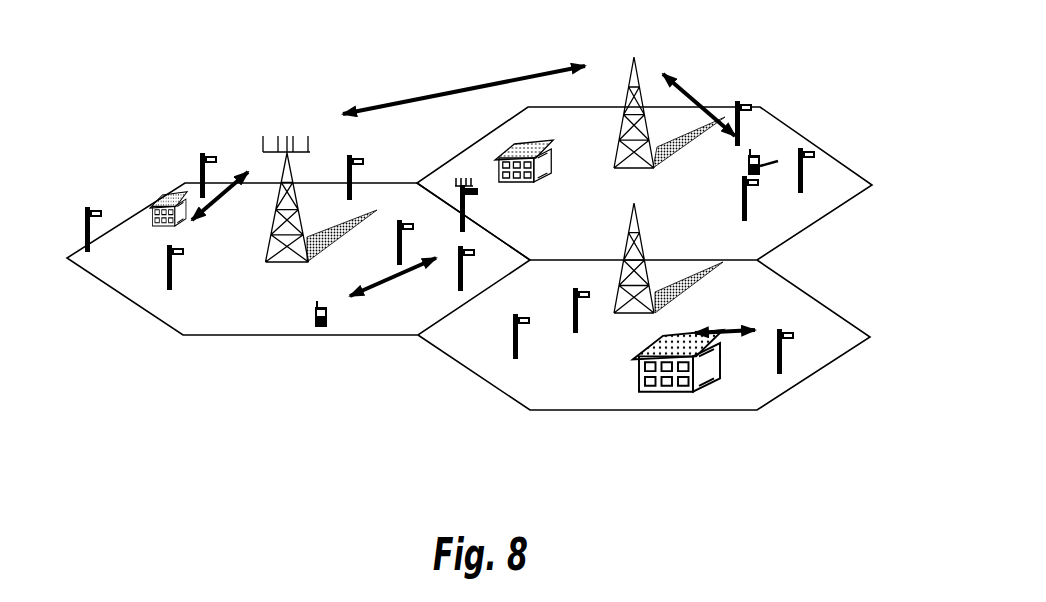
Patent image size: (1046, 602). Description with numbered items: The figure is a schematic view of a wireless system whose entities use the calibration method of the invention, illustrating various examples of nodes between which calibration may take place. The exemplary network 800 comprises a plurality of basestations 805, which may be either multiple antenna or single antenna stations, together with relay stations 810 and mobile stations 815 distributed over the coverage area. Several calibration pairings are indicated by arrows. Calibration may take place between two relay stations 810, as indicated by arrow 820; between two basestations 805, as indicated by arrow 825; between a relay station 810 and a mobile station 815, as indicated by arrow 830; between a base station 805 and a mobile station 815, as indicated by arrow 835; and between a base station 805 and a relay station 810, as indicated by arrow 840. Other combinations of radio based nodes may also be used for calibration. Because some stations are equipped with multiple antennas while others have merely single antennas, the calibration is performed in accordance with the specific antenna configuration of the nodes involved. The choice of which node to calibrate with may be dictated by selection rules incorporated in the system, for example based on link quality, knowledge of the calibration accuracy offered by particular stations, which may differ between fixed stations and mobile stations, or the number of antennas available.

The network 800 is at (168, 103).
The basestation 805 is at (280, 130).
The relay station 810 is at (165, 252).
The mobile station 815 is at (322, 330).
The arrow 820 is at (735, 343).
The arrow 825 is at (435, 83).
The arrow 830 is at (373, 292).
The arrow 835 is at (690, 90).
The arrow 840 is at (207, 184).